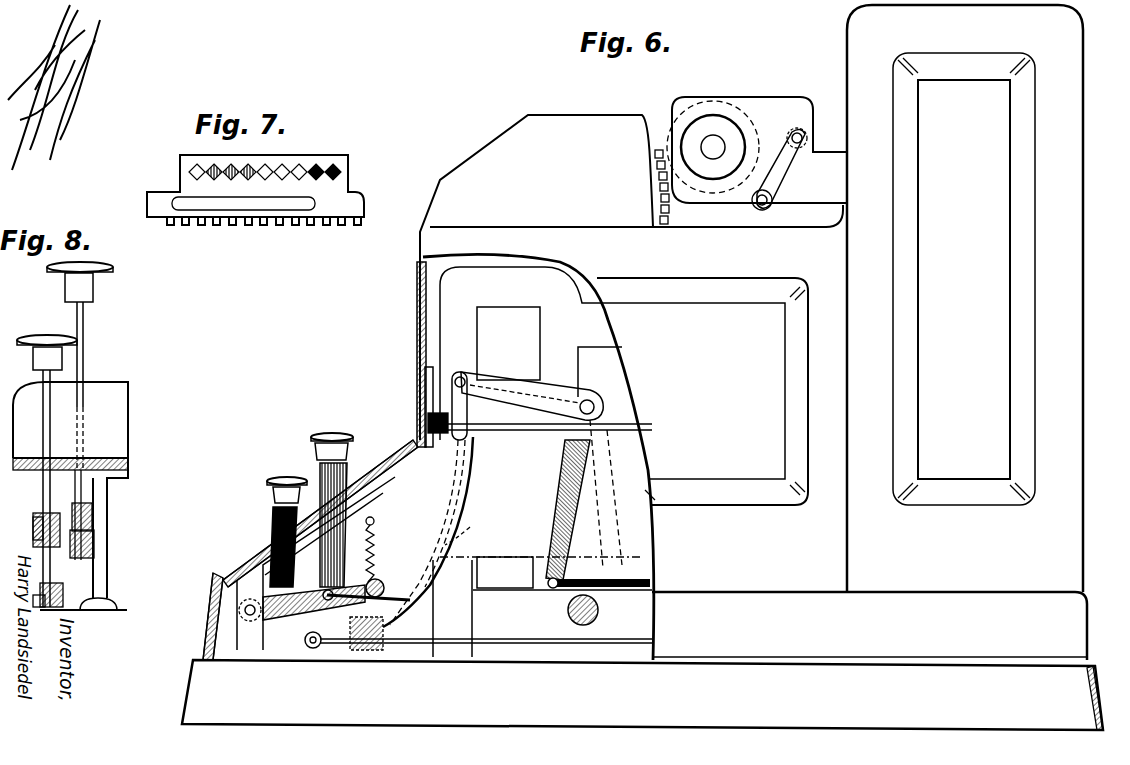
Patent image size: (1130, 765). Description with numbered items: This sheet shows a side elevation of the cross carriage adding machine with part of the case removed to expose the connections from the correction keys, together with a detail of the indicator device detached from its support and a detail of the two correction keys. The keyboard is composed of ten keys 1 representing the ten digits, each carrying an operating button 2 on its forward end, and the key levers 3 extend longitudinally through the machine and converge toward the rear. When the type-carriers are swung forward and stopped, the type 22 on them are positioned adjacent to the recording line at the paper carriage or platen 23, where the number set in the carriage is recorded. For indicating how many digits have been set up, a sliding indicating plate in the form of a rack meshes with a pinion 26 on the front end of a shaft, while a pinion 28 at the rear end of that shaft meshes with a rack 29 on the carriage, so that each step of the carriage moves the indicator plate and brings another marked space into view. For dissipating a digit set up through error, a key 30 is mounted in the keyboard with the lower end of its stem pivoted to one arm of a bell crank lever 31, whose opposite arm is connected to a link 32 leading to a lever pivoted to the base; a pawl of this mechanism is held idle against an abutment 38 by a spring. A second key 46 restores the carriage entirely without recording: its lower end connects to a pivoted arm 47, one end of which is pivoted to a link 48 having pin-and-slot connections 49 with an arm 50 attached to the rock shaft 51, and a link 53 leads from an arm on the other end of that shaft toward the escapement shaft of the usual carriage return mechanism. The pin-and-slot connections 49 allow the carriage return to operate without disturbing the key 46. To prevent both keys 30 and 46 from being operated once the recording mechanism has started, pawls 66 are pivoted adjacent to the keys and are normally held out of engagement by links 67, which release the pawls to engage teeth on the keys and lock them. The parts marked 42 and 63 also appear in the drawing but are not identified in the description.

In FIG. 8, the keys 1 is at (88, 432).
In FIG. 6, the operating buttons 2 is at (270, 497).
In FIG. 6, the key levers 3 is at (505, 572).
In FIG. 6, the type 22 is at (664, 214).
In FIG. 6, the paper carriage or platen 23 is at (714, 125).
In FIG. 7, the pinion 26 is at (349, 194).
In FIG. 6, the pinion 26 is at (421, 447).
In FIG. 6, the pinion 28 is at (431, 378).
In FIG. 6, the rack 29 is at (612, 428).
In FIG. 8, the key 30 is at (46, 430).
In FIG. 6, the key 30 is at (274, 520).
In FIG. 8, the bell crank lever 31 is at (45, 562).
In FIG. 6, the bell crank lever 31 is at (300, 628).
In FIG. 8, the link 32 is at (56, 583).
In FIG. 6, the abutment 38 is at (530, 648).
In FIG. 6, the pin 42 is at (341, 594).
In FIG. 8, the key 46 is at (80, 345).
In FIG. 8, the pivoted arm 47 is at (92, 545).
In FIG. 6, the link 48 is at (438, 545).
In FIG. 6, the pin-and-slot connections 49 is at (463, 398).
In FIG. 6, the arm 50 is at (532, 396).
In FIG. 6, the rock shaft 51 is at (594, 407).
In FIG. 6, the link 53 is at (560, 520).
In FIG. 6, the pivot lever 63 is at (628, 580).
In FIG. 6, the pawls 66 is at (379, 557).
In FIG. 6, the links 67 is at (404, 600).